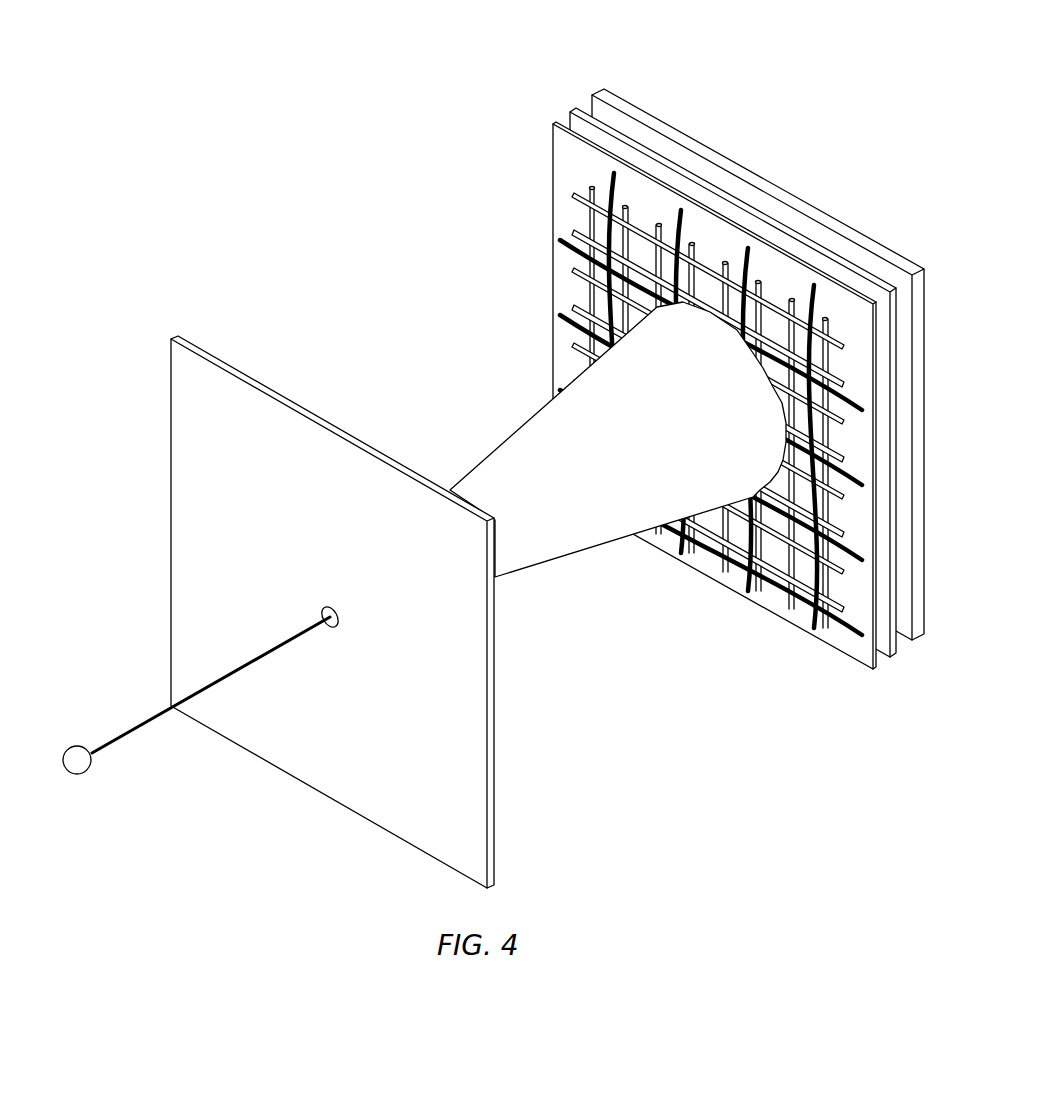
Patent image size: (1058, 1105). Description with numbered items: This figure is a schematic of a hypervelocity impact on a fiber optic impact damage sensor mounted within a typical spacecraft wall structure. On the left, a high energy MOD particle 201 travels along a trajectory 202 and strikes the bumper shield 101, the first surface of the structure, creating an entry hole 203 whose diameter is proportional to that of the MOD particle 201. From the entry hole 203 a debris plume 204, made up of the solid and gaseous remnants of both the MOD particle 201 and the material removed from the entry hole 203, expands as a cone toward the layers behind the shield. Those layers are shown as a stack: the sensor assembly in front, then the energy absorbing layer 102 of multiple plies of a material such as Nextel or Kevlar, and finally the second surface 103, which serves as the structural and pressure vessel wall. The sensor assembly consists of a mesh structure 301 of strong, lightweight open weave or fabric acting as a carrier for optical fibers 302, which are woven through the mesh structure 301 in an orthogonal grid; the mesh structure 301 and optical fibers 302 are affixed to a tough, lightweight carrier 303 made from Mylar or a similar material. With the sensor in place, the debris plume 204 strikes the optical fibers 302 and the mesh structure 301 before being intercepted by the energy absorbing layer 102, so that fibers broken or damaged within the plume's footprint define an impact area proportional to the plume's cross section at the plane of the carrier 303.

The bumper shield 101 is at (160, 327).
The energy absorbing layer 102 is at (563, 105).
The second surface 103 is at (603, 85).
The MOD particle 201 is at (70, 738).
The trajectory 202 is at (145, 712).
The entry hole 203 is at (323, 587).
The debris plume 204 is at (517, 417).
The mesh structure 301 is at (562, 300).
The optical fibers 302 is at (560, 233).
The carrier 303 is at (543, 142).